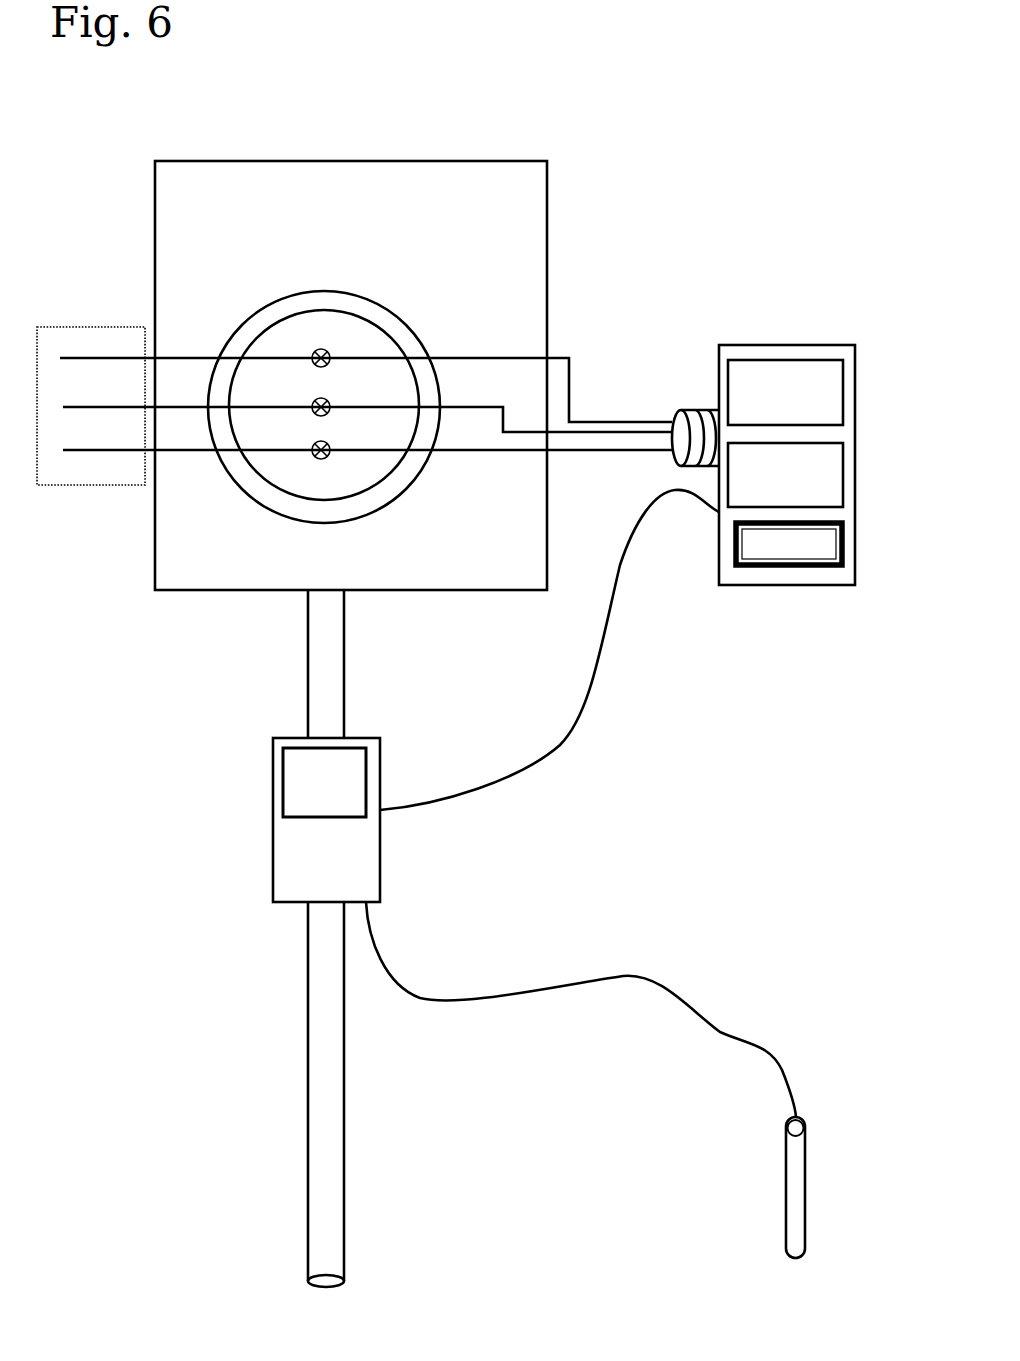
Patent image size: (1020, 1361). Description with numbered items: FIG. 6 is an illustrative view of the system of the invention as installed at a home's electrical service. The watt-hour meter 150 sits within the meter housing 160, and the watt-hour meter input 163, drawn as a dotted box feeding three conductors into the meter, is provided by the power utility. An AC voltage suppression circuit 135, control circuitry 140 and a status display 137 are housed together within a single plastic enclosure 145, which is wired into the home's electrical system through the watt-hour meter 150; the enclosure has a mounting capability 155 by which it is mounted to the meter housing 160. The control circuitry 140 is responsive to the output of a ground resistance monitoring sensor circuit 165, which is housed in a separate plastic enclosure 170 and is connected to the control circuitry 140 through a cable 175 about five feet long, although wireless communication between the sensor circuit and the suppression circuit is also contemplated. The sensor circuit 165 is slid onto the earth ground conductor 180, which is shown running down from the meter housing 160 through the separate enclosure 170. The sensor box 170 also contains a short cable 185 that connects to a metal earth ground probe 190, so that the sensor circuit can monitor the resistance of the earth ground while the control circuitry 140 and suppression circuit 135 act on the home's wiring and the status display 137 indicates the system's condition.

The meter housing 160 is at (547, 202).
The watt-hour meter input 163 is at (70, 327).
The watt-hour meter 150 is at (417, 328).
The mounting capability 155 is at (623, 420).
The plastic enclosure 145 is at (791, 345).
The AC voltage suppression circuit 135 is at (843, 393).
The control circuitry 140 is at (843, 470).
The status display 137 is at (845, 553).
The earth ground conductor 180 is at (343, 705).
The separate plastic enclosure 170 is at (273, 862).
The ground resistance monitoring sensor circuit 165 is at (283, 791).
The cable 175 is at (602, 640).
The short cable 185 is at (536, 989).
The metal earth ground probe 190 is at (805, 1180).